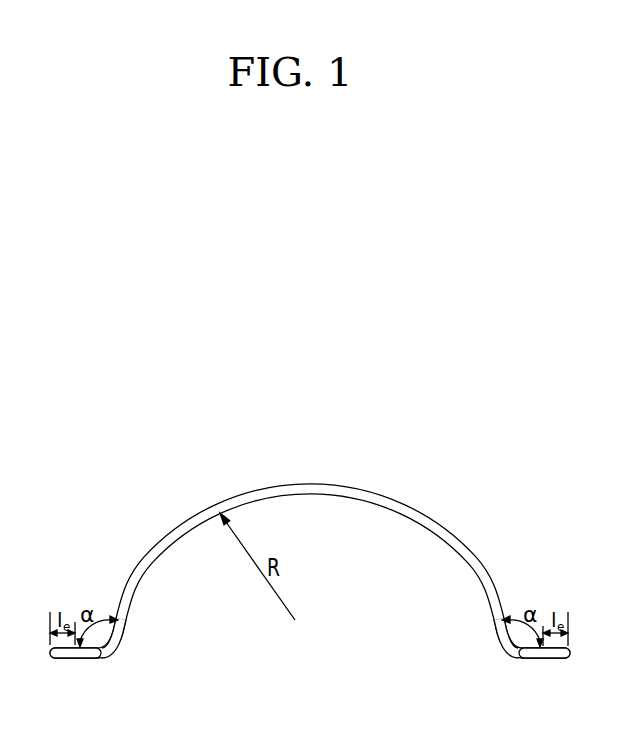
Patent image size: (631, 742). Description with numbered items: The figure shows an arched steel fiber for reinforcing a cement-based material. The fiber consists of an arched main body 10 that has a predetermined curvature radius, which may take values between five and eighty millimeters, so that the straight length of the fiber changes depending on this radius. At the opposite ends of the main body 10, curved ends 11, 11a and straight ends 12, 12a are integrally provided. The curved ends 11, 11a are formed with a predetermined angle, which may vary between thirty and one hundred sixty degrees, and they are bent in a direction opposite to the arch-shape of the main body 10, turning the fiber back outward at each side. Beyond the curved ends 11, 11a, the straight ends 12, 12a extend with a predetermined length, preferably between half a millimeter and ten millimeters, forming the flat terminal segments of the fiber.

The arched main body 10 is at (368, 472).
The curved end 11 is at (100, 649).
The curved end 11a is at (515, 649).
The straight end 12 is at (63, 656).
The straight end 12a is at (557, 656).